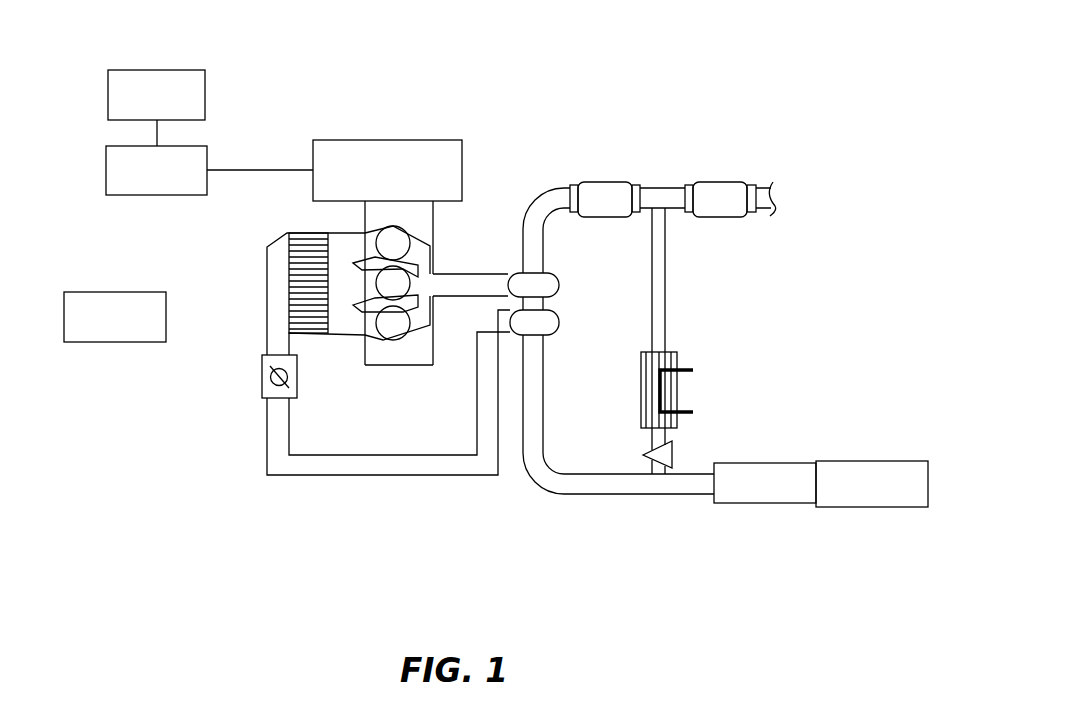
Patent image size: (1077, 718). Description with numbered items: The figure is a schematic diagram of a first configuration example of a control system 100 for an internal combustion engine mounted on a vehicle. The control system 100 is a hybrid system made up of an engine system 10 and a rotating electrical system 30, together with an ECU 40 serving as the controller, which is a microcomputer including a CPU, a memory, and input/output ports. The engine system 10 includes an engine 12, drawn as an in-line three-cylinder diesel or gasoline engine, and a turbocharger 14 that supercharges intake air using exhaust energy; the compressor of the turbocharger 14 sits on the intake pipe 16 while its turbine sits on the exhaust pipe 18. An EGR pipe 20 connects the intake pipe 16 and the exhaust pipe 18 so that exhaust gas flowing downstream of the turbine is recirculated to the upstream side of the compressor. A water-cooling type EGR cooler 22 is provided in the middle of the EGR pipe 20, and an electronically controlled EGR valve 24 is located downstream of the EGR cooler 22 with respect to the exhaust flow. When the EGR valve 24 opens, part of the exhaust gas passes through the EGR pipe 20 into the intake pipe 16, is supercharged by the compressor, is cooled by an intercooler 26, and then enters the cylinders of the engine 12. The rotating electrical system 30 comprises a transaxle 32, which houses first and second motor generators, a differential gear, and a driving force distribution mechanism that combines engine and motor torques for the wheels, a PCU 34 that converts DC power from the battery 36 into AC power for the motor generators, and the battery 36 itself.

The engine system 10 is at (206, 464).
The engine 12 is at (378, 372).
The turbocharger 14 is at (568, 305).
The intake pipe 16 is at (600, 473).
The exhaust pipe 18 is at (493, 274).
The EGR pipe 20 is at (665, 268).
The EGR cooler 22 is at (677, 353).
The EGR valve 24 is at (672, 450).
The intercooler 26 is at (288, 299).
The rotating electrical system 30 is at (266, 127).
The transaxle 32 is at (417, 140).
The PCU 34 is at (106, 160).
The battery 36 is at (108, 78).
The ECU 40 is at (64, 312).
The control system 100 is at (736, 106).